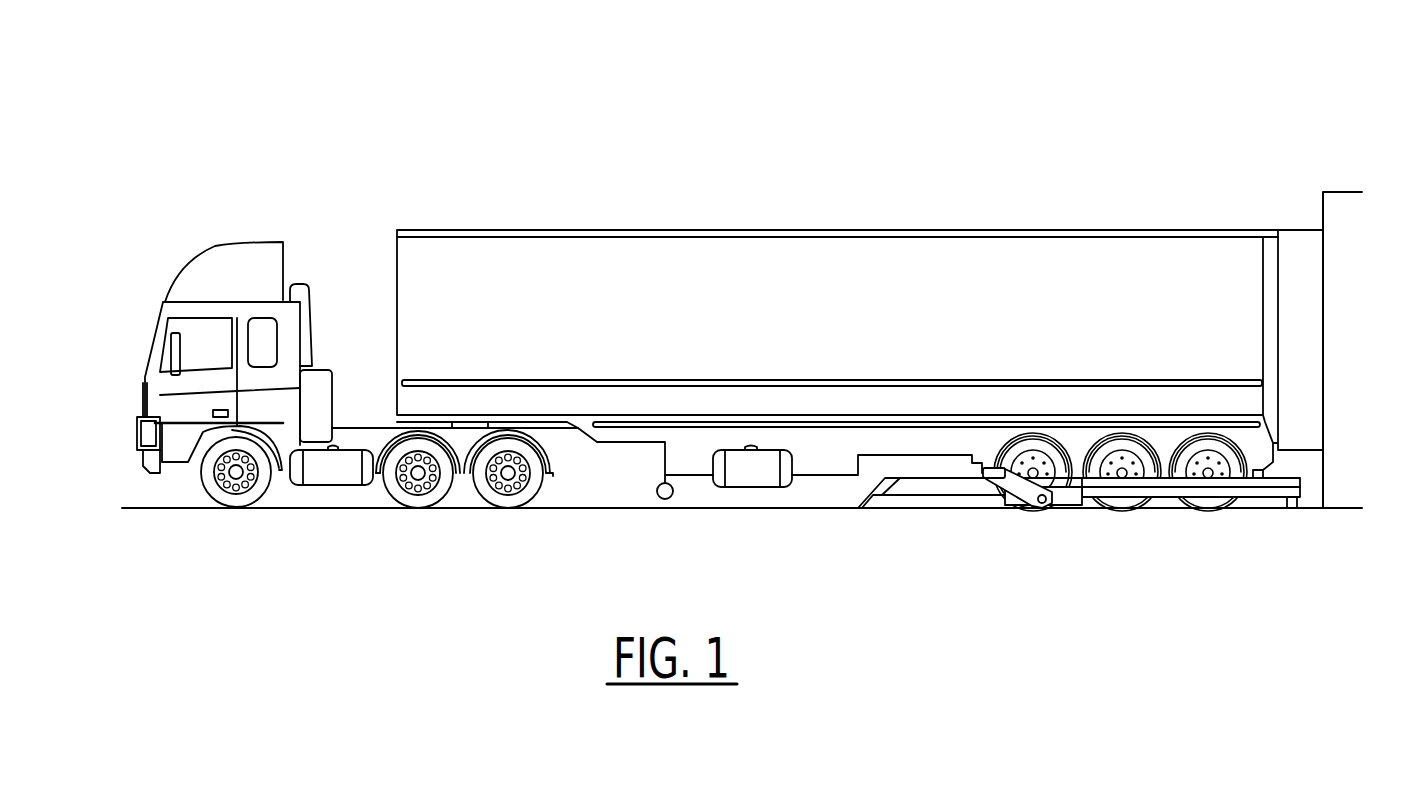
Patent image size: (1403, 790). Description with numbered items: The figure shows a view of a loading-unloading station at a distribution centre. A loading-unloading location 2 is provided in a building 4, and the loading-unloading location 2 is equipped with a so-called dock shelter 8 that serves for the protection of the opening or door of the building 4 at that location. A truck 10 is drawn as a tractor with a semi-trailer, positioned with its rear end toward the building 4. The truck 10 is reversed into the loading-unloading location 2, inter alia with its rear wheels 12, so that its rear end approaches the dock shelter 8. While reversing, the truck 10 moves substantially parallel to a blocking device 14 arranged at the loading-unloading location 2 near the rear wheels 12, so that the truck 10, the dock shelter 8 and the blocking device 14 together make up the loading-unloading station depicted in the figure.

The loading-unloading location 2 is at (730, 333).
The building 4 is at (1340, 205).
The dock shelter 8 is at (1302, 250).
The truck 10 is at (722, 255).
The rear wheels 12 is at (1037, 452).
The blocking device 14 is at (935, 530).